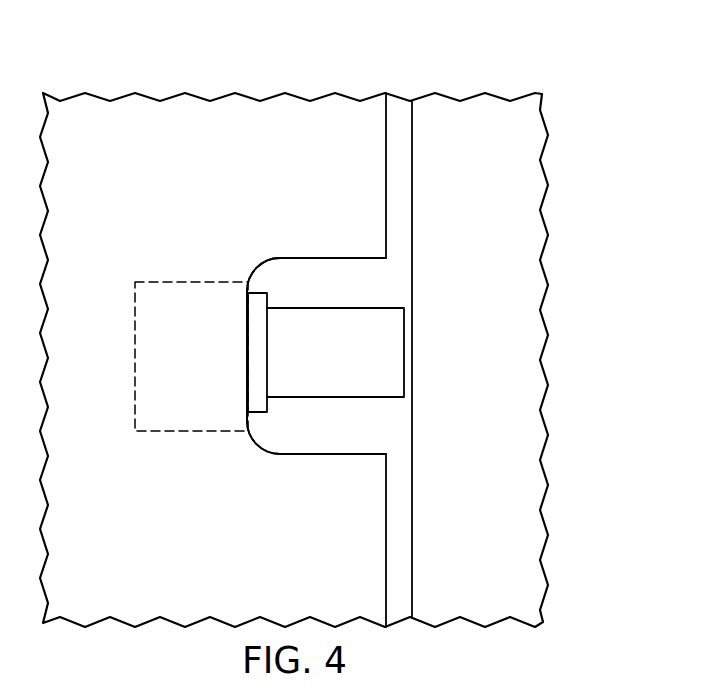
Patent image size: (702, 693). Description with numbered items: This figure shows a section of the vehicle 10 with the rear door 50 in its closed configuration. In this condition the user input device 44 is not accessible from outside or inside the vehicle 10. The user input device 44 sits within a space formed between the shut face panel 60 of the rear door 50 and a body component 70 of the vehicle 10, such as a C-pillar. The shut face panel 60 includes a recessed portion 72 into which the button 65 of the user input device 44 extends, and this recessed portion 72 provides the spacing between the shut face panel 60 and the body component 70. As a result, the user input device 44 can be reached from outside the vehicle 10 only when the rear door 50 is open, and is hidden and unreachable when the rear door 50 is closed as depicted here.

The vehicle 10 is at (529, 36).
The user input device 44 is at (187, 432).
The rear door 50 is at (178, 108).
The shut face panel 60 is at (386, 160).
The button 65 is at (390, 352).
The body component 70 is at (535, 223).
The recessed portion 72 is at (298, 258).